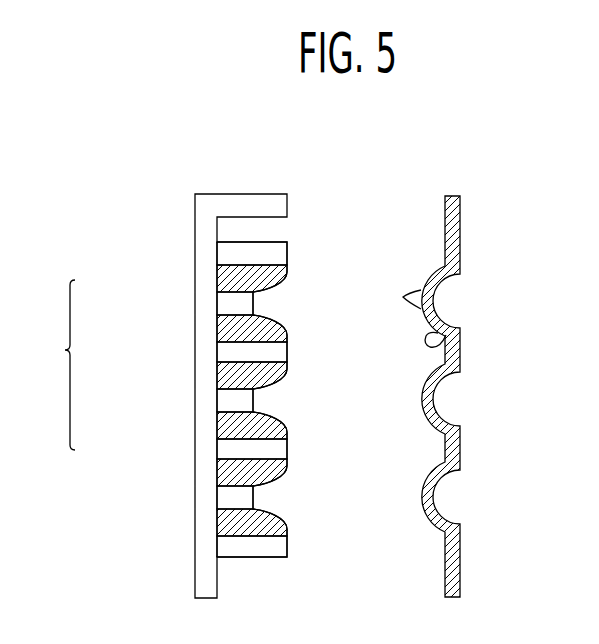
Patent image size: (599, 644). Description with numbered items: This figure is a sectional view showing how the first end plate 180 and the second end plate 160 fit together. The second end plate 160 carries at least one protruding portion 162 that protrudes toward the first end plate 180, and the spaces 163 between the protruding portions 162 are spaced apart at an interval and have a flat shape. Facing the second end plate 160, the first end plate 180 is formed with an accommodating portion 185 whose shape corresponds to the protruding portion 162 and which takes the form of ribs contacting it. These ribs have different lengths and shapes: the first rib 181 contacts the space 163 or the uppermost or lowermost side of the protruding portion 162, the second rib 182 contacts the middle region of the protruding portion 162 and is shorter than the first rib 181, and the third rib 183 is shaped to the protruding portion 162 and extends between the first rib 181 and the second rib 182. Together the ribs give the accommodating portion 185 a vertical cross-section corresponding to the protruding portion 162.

The second end plate 160 is at (524, 248).
The protruding portion 162 is at (422, 294).
The space 163 is at (447, 328).
The first end plate 180 is at (170, 200).
The first rib 181 is at (243, 447).
The second rib 182 is at (233, 502).
The third rib 183 is at (230, 548).
The accommodating portion 185 is at (52, 365).